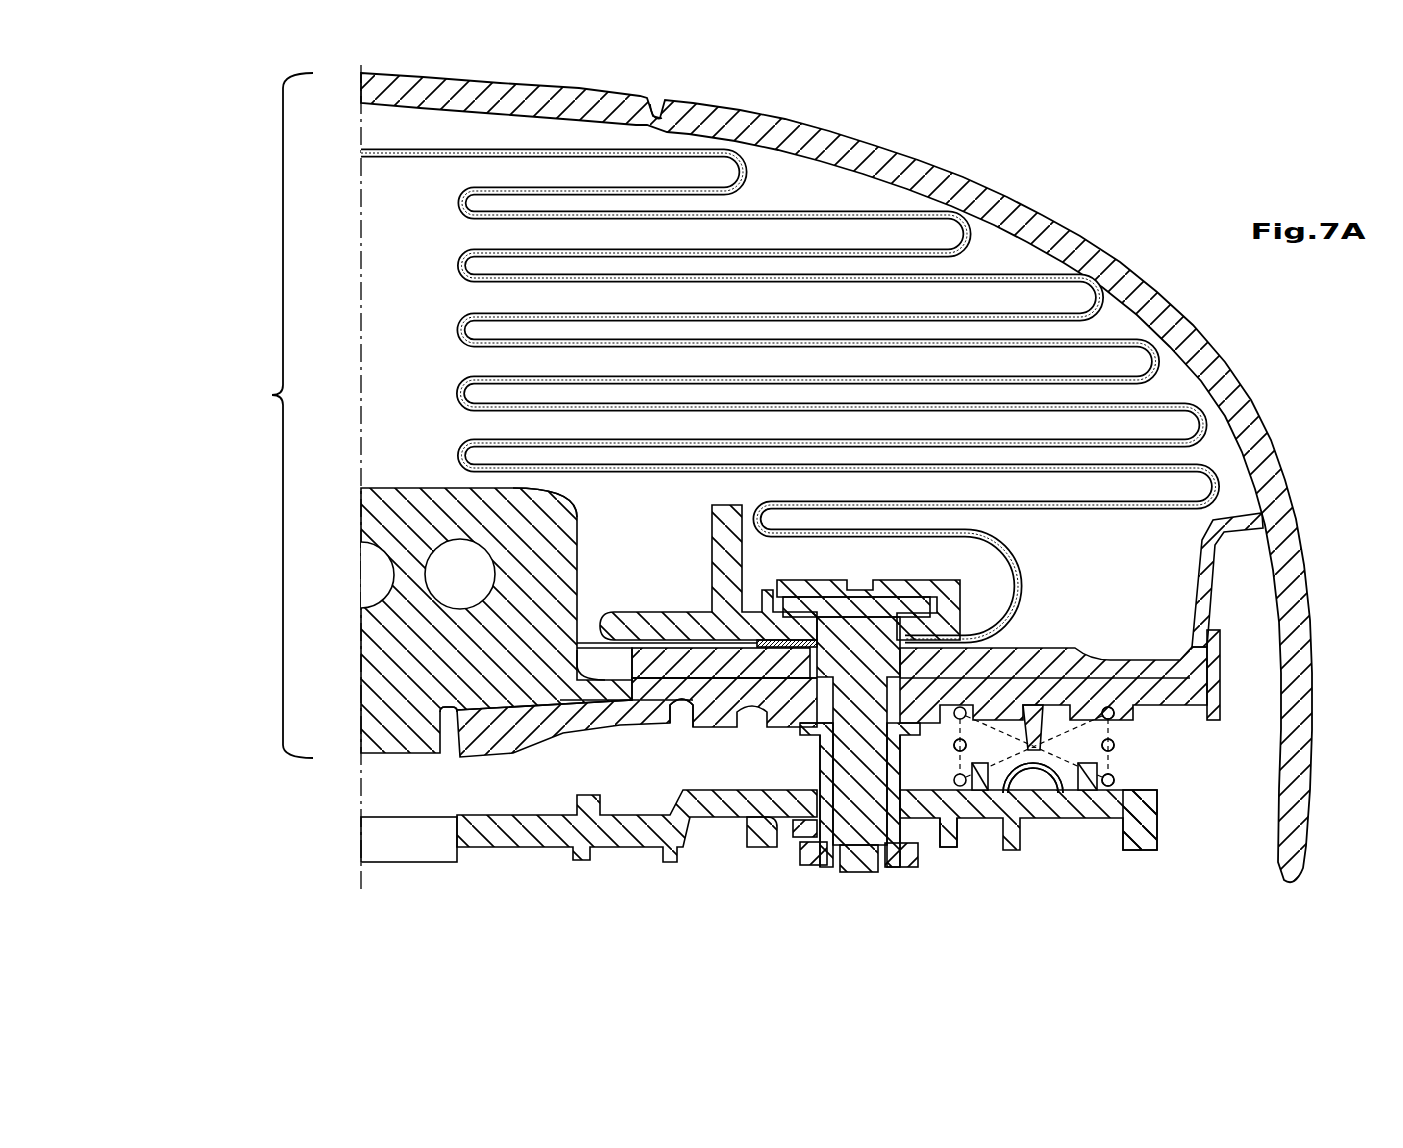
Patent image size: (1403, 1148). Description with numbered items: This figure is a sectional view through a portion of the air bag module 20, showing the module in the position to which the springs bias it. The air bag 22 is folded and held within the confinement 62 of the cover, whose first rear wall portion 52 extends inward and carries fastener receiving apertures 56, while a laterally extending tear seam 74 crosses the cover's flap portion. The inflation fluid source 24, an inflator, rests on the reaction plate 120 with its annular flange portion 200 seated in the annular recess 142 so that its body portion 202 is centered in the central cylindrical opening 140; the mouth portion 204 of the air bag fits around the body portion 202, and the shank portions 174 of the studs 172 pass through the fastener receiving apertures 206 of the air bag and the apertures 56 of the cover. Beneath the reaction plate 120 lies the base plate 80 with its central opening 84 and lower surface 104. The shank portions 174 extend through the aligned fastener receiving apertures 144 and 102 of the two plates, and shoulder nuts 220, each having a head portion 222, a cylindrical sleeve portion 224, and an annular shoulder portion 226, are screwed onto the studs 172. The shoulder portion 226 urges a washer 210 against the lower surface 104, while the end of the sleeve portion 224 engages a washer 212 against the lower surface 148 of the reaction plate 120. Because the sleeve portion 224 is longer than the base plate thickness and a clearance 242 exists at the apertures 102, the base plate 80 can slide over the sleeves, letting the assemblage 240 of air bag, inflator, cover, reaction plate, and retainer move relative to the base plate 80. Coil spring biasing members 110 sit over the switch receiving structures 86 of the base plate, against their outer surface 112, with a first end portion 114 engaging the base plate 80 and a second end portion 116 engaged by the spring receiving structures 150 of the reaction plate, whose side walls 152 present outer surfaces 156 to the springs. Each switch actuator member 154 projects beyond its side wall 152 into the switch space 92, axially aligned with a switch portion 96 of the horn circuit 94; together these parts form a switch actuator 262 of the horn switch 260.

The air bag module 20 is at (928, 112).
The air bag 22 is at (921, 211).
The inflation fluid source 24 is at (485, 512).
The first rear wall portion 52 is at (665, 660).
The fastener receiving apertures 56 is at (903, 613).
The confinement 62 is at (392, 218).
The laterally extending tear seam 74 is at (668, 112).
The base plate 80 is at (622, 832).
The central opening 84 is at (395, 838).
The switch receiving structures 86 is at (1140, 806).
The switch space 92 is at (995, 795).
The horn circuit 94 is at (1040, 800).
The switch portions 96 is at (1047, 806).
The fastener receiving apertures 102 is at (760, 824).
The lower surface 104 is at (604, 660).
The spring biasing members 110 is at (1116, 748).
The outer surface 112 is at (1116, 782).
The first end portion 114 is at (957, 795).
The second end portion 116 is at (1110, 690).
The reaction plate 120 is at (495, 738).
The central cylindrical opening 140 is at (448, 743).
The annular recess 142 is at (688, 712).
The fastener receiving apertures 144 is at (820, 752).
The lower surface 148 is at (792, 726).
The spring receiving structures 150 is at (965, 710).
The side walls 152 is at (1115, 716).
The switch actuator member 154 is at (1035, 735).
The outer surfaces 156 is at (954, 747).
The studs 172 is at (817, 606).
The shank portions 174 is at (861, 788).
The annular flange portion 200 is at (618, 700).
The body portion 202 is at (545, 530).
The mouth portion 204 is at (777, 640).
The fastener receiving apertures 206 is at (1019, 568).
The washers 210 is at (817, 828).
The washer 212 is at (803, 760).
The shoulder nuts 220 is at (903, 867).
The head portion 222 is at (813, 865).
The cylindrical sleeve portion 224 is at (923, 800).
The annular shoulder portion 226 is at (850, 873).
The assemblage 240 is at (262, 415).
The clearance 242 is at (793, 831).
The horn switch 260 is at (1072, 798).
The switch actuators 262 is at (1033, 780).